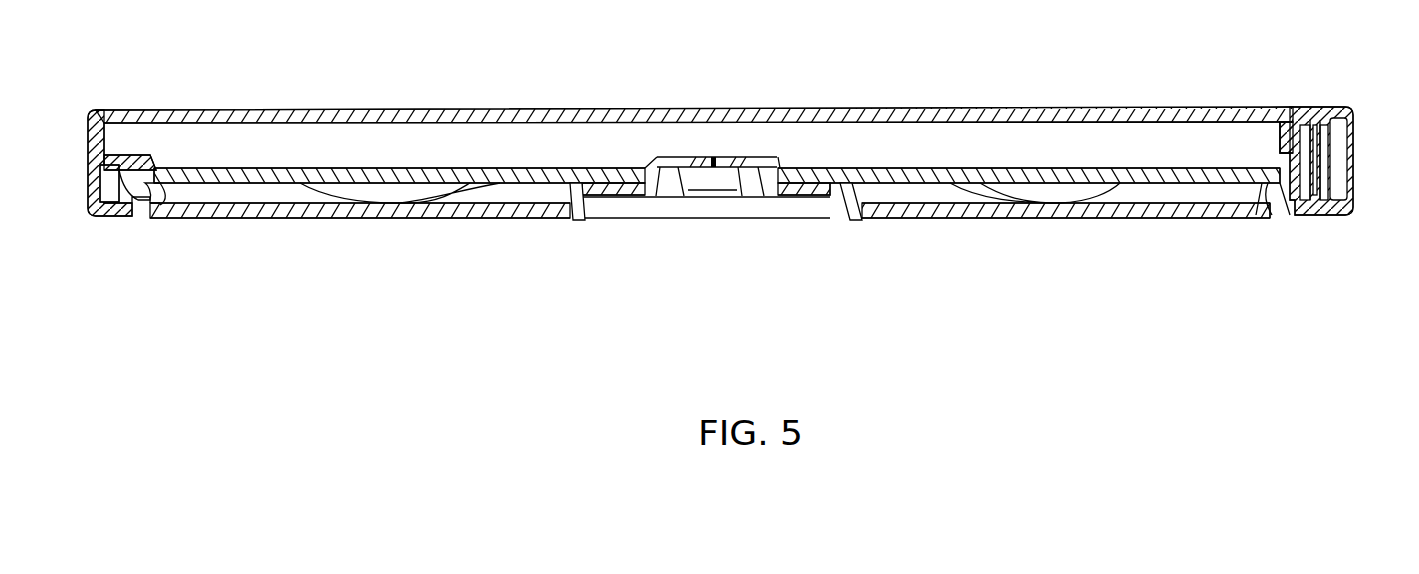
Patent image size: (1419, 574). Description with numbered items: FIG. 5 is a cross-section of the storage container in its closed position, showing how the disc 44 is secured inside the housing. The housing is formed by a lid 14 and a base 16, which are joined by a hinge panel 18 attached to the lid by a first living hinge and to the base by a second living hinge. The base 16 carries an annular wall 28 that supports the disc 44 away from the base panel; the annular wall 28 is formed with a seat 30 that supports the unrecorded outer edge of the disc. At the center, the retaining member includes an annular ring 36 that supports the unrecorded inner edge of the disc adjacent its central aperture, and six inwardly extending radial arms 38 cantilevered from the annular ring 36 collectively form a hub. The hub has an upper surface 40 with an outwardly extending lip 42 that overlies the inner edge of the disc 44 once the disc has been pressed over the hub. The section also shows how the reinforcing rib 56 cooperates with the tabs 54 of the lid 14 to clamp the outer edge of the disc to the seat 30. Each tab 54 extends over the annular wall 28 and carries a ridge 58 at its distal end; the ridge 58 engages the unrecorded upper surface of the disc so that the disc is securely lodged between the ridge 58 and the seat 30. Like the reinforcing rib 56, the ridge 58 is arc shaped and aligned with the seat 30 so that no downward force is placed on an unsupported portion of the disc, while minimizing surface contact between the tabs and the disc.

The lid 14 is at (238, 110).
The base 16 is at (289, 219).
The hinge panel 18 is at (86, 178).
The annular wall 28 is at (103, 127).
The seat 30 is at (168, 195).
The annular ring 36 is at (578, 221).
The radial arms 38 is at (640, 197).
The upper surface 40 is at (670, 157).
The lip 42 is at (647, 165).
The disc 44 is at (448, 168).
The tab 54 is at (1283, 128).
The reinforcing rib 56 is at (135, 160).
The ridge 58 is at (1280, 165).